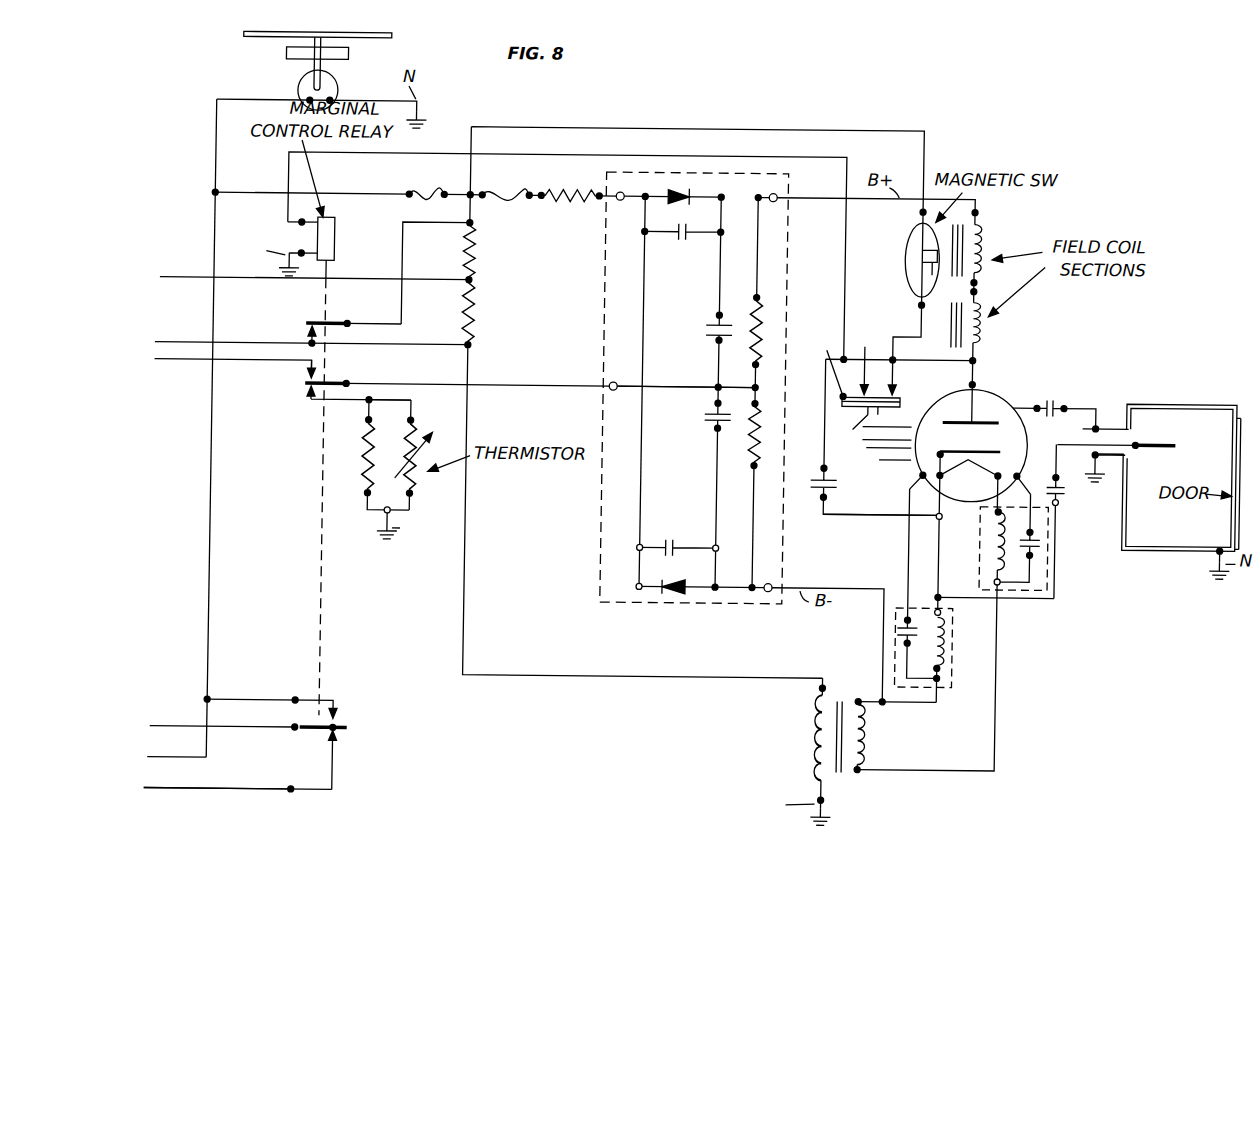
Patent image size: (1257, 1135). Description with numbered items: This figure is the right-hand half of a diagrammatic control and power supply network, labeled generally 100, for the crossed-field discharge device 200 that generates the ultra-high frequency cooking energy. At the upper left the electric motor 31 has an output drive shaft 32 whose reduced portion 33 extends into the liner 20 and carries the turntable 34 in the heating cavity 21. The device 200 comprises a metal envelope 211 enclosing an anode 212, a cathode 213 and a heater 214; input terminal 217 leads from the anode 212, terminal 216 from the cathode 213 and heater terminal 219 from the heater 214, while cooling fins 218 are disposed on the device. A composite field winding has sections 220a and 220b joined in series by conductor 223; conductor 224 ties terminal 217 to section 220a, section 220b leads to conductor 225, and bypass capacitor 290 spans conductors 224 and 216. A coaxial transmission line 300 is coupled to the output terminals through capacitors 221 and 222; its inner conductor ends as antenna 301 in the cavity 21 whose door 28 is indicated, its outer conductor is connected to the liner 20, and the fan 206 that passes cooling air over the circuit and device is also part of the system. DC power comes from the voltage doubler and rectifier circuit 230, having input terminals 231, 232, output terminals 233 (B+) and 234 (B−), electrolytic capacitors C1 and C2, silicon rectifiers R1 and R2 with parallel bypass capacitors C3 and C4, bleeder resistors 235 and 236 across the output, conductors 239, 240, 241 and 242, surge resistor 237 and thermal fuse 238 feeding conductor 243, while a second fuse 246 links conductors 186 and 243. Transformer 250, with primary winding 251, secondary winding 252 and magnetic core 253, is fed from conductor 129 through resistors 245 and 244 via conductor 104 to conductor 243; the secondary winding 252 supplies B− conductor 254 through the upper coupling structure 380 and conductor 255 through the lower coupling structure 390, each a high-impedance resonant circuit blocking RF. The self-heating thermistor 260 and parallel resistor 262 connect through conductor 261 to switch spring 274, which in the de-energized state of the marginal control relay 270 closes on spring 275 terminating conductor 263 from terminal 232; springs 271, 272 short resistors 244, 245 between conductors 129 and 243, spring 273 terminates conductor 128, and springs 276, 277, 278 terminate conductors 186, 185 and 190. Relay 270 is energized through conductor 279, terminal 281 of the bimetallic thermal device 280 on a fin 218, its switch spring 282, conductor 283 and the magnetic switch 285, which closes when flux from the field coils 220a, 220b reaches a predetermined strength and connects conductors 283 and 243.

The turntable 34 is at (242, 38).
The reduced portion 33 is at (344, 56).
The output drive shaft 32 is at (322, 70).
The electric motor 31 is at (293, 88).
The conductor 279 is at (334, 155).
The thermal fuse 246 is at (428, 190).
The thermal fuse 238 is at (500, 190).
The surge limiting resistor 237 is at (566, 202).
The input terminal 231 is at (617, 201).
The output terminal 233 is at (776, 199).
The magnetic switch 285 is at (900, 250).
The conductor 225 is at (976, 206).
The field winding section 220b is at (982, 235).
The conductor 223 is at (975, 284).
The field winding section 220a is at (982, 331).
The conductor 283 is at (920, 325).
The thermal protective device 280 is at (867, 361).
The terminal 281 is at (821, 364).
The switch spring 282 is at (895, 374).
The conductor 224 is at (825, 386).
The input terminal 217 is at (976, 383).
The crossed-field discharge device 200 is at (1001, 387).
The envelope 211 is at (1012, 402).
The capacitor 221 is at (1056, 400).
The transmission line 300 is at (1103, 417).
The anode 212 is at (992, 411).
The cathode 213 is at (975, 448).
The heater 214 is at (974, 468).
The antenna 301 is at (1166, 440).
The door seal 28 is at (1236, 457).
The heating cavity 21 is at (1168, 521).
The fan 206 is at (1060, 472).
The capacitor 222 is at (1060, 501).
The liner 20 is at (1164, 547).
The lower coupling structure 390 is at (1038, 594).
The upper coupling structure 380 is at (964, 664).
The cooling fins 218 is at (865, 445).
The bypass capacitor 290 is at (840, 484).
The output terminal 216 is at (937, 516).
The heater terminal 219 is at (983, 504).
The B− conductor 254 is at (851, 588).
The output terminal 234 is at (770, 591).
The conductor 241 is at (733, 590).
The coupling magnetic core 253 is at (845, 692).
The secondary winding 252 is at (871, 743).
The primary winding 251 is at (818, 746).
The transformer 250 is at (834, 736).
The conductor 255 is at (938, 768).
The bleeder resistor 236 is at (766, 420).
The bleeder resistor 235 is at (763, 327).
The conductor 240 is at (752, 384).
The input terminal 232 is at (613, 391).
The conductor 263 is at (569, 386).
The conductor 129 is at (192, 346).
The conductor 104 is at (198, 281).
The resistor 244 is at (475, 254).
The resistor 245 is at (475, 302).
The conductor 243 is at (463, 216).
The conductor 186 is at (252, 198).
The marginal control relay 270 is at (333, 240).
The conductor 128 is at (190, 363).
The switch spring 271 is at (308, 342).
The switch spring 272 is at (330, 326).
The switch spring 273 is at (322, 367).
The switch spring 275 is at (307, 386).
The switch spring 274 is at (307, 401).
The conductor 261 is at (372, 402).
The thermistor 260 is at (426, 421).
The resistor 262 is at (365, 455).
The conductor 190 is at (186, 730).
The conductor 185 is at (190, 792).
The switch spring 276 is at (341, 704).
The switch spring 278 is at (355, 731).
The switch spring 277 is at (344, 759).
The conductor 239 is at (718, 280).
The conductor 242 is at (642, 282).
The voltage doubler and rectifier circuit 230 is at (725, 167).
The control circuit 100 is at (568, 99).
The rectifying diode R1 is at (676, 201).
The rectifying diode R2 is at (678, 580).
The capacitor C1 is at (705, 326).
The capacitor C2 is at (705, 413).
The capacitor C3 is at (678, 240).
The capacitor C4 is at (677, 538).